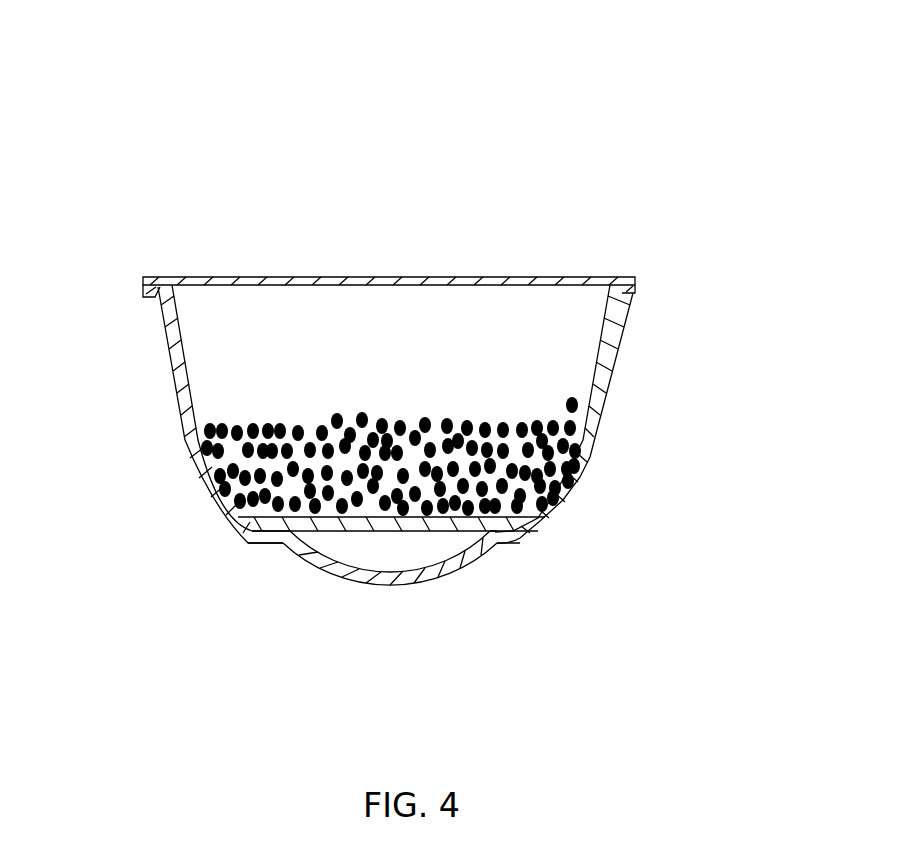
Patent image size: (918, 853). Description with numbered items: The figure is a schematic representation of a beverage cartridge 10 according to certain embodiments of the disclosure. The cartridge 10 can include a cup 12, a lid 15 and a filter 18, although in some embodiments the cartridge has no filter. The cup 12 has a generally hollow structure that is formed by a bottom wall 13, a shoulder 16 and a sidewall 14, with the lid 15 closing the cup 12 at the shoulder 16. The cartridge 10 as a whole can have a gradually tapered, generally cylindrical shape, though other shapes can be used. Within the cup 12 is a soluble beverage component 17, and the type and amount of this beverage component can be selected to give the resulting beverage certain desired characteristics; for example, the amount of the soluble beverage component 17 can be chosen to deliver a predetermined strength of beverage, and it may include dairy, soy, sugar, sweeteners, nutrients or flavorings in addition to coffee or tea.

The cartridge 10 is at (557, 117).
The cup 12 is at (385, 480).
The bottom wall 13 is at (407, 585).
The sidewall 14 is at (607, 370).
The lid 15 is at (287, 277).
The shoulder 16 is at (620, 293).
The soluble beverage component 17 is at (560, 497).
The filter 18 is at (318, 535).